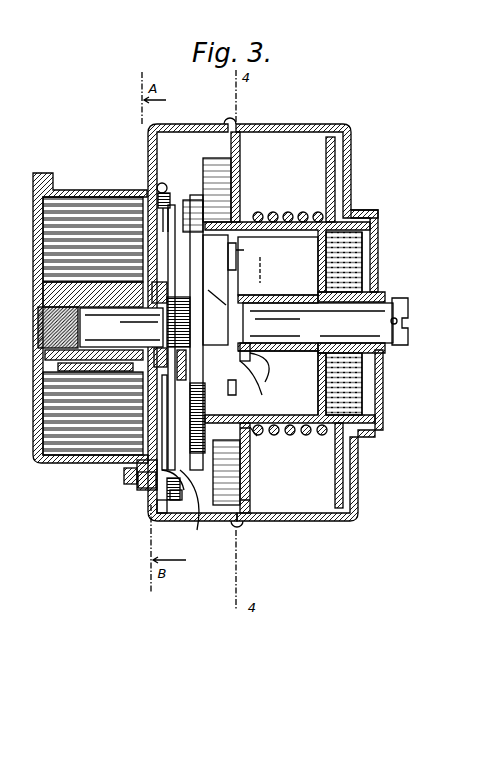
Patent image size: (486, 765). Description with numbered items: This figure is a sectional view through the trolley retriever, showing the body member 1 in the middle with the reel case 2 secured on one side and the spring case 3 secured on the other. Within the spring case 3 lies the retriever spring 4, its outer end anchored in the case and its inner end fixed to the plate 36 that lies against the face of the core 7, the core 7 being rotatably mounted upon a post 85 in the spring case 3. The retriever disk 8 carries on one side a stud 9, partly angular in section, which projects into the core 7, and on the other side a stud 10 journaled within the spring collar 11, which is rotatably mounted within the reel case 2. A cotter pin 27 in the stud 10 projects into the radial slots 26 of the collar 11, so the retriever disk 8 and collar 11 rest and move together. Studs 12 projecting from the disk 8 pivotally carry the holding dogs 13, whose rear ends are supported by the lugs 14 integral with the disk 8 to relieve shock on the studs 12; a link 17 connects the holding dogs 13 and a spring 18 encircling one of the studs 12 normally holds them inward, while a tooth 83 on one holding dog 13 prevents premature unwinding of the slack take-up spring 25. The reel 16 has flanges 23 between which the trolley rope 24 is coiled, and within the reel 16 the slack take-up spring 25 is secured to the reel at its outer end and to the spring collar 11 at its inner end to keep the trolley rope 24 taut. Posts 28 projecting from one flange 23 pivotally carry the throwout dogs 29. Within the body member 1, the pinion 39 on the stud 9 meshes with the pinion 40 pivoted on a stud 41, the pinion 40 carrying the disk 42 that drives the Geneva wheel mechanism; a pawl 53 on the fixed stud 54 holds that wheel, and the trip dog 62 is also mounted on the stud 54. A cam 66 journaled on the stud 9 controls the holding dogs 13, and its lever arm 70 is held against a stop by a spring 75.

The body member 1 is at (206, 122).
The reel case 2 is at (308, 124).
The spring case 3 is at (113, 190).
The retriever spring 4 is at (50, 251).
The core 7 is at (47, 362).
The retriever disk 8 is at (195, 318).
The stud 9 is at (121, 327).
The stud 10 is at (375, 322).
The spring collar 11 is at (384, 302).
The studs 12 is at (251, 357).
The holding dogs 13 is at (236, 256).
The lugs 14 is at (205, 332).
The reel 16 is at (283, 214).
The link 17 is at (248, 280).
The spring 18 is at (262, 372).
The flanges 23 is at (240, 176).
The trolley rope 24 is at (292, 434).
The slack take-up spring 25 is at (375, 212).
The radial slots 26 is at (408, 305).
The cotter pin 27 is at (410, 322).
The posts 28 is at (243, 463).
The throwout dogs 29 is at (218, 180).
The plate 36 is at (62, 383).
The pinion 39 is at (162, 400).
The pinion 40 is at (133, 472).
The stud 41 is at (200, 531).
The disk 42 is at (160, 495).
The pawl 53 is at (148, 485).
The stud 54 is at (178, 500).
The trip dog 62 is at (158, 520).
The cam 66 is at (184, 375).
The lever arm 70 is at (175, 255).
The spring 75 is at (168, 186).
The tooth 83 is at (250, 437).
The post 85 is at (55, 326).